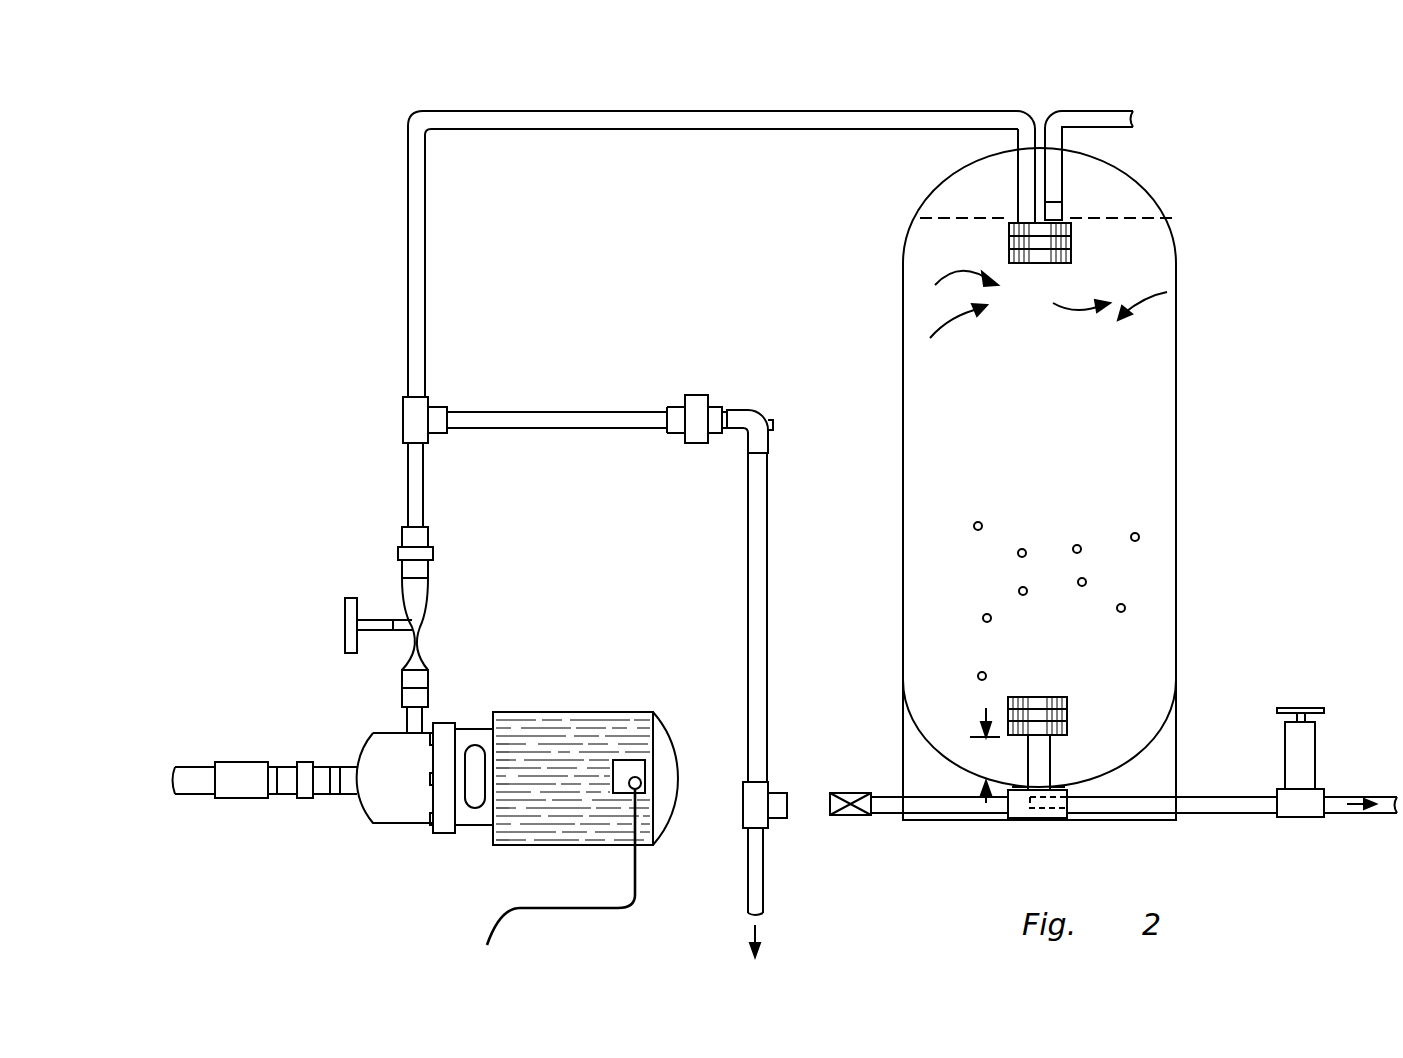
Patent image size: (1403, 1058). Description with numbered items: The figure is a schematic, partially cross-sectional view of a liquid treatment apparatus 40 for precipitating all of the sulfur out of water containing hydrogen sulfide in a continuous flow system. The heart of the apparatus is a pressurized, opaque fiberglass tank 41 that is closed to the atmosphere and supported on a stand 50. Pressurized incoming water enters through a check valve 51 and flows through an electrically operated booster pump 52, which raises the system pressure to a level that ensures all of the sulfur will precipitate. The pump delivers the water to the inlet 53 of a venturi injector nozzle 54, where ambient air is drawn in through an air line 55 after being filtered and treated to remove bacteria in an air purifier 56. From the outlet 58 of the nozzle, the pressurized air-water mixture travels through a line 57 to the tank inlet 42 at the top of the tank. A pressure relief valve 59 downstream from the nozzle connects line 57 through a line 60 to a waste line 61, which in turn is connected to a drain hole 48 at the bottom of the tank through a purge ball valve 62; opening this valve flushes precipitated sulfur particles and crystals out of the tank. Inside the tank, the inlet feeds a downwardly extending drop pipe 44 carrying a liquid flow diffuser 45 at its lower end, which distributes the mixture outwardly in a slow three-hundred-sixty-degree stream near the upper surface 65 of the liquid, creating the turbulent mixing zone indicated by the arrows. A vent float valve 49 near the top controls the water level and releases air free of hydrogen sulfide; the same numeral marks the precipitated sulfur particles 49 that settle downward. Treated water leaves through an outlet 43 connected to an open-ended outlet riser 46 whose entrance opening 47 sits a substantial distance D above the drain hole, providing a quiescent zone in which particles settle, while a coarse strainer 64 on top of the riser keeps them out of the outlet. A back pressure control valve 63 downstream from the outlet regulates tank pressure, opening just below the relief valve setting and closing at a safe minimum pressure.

The apparatus 40 is at (1212, 193).
The tank 41 is at (903, 312).
The inlet 42 is at (1018, 150).
The outlet 43 is at (1060, 787).
The drop pipe 44 is at (1018, 190).
The liquid flow diffuser 45 is at (1072, 245).
The outlet riser 46 is at (1038, 755).
The entrance opening 47 is at (1068, 740).
The drain hole 48 is at (1020, 800).
The vent float valve 49 is at (1055, 172).
The stand 50 is at (1178, 716).
The check valve 51 is at (252, 780).
The booster pump 52 is at (600, 712).
The inlet 53 is at (423, 720).
The venturi injector nozzle 54 is at (430, 620).
The air line 55 is at (375, 618).
The air purifier 56 is at (345, 625).
The line 57 is at (412, 278).
The outlet 58 is at (412, 488).
The pressure relief valve 59 is at (707, 395).
The line 60 is at (600, 412).
The waste line 61 is at (767, 600).
The purge ball valve 62 is at (850, 818).
The back pressure control valve 63 is at (1300, 745).
The coarse strainer 64 is at (1007, 697).
The upper surface 65 is at (955, 218).